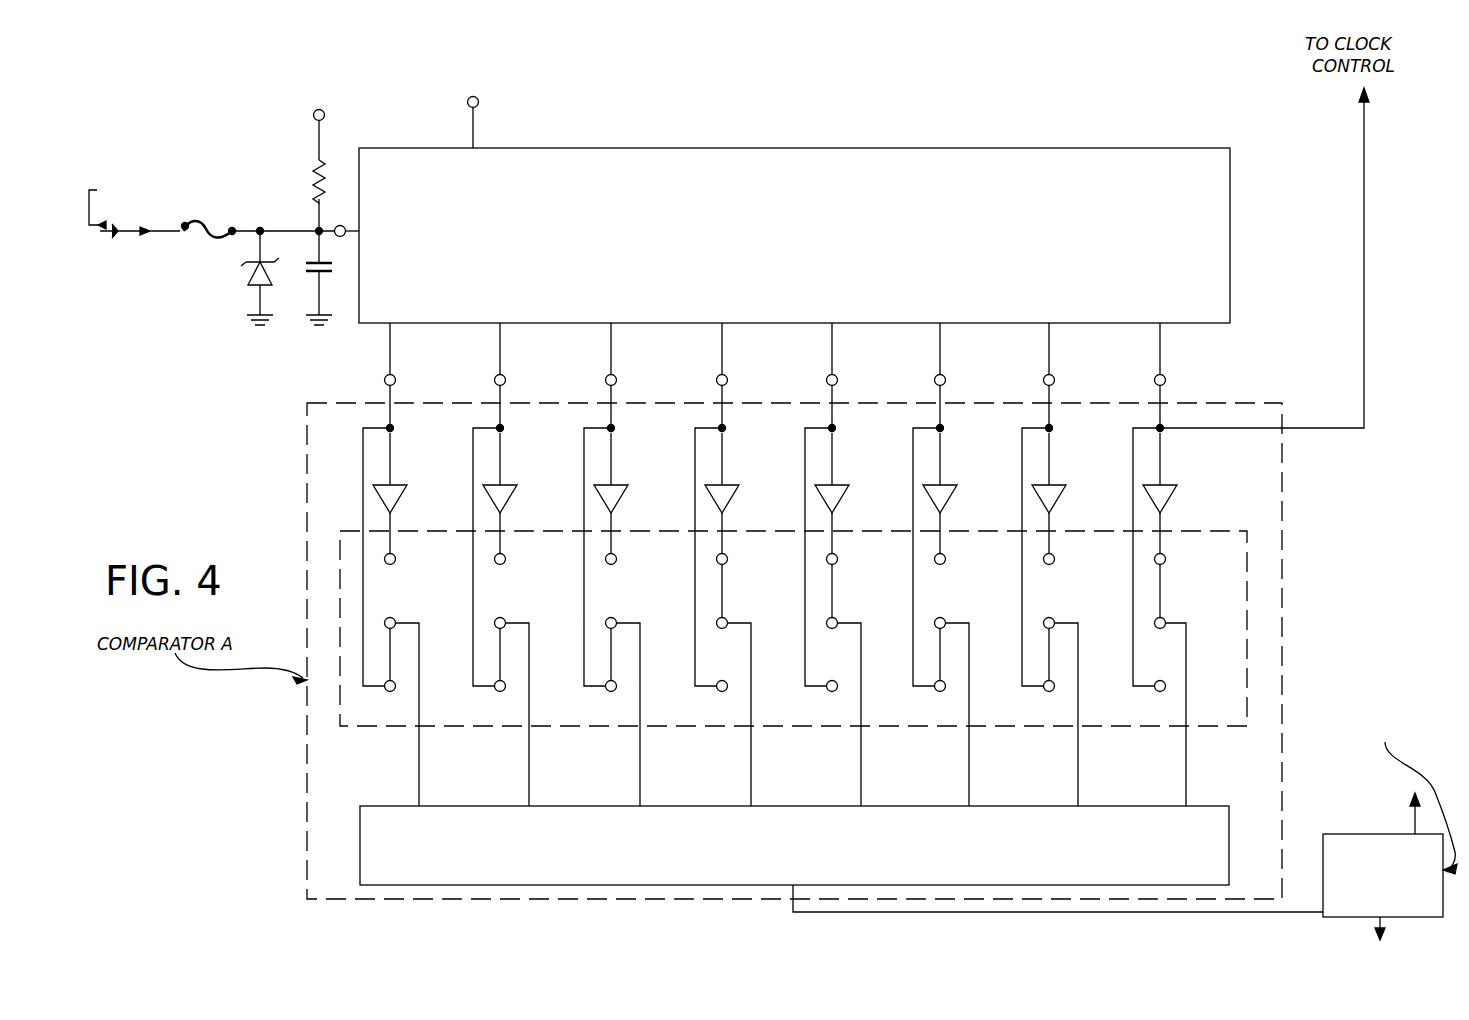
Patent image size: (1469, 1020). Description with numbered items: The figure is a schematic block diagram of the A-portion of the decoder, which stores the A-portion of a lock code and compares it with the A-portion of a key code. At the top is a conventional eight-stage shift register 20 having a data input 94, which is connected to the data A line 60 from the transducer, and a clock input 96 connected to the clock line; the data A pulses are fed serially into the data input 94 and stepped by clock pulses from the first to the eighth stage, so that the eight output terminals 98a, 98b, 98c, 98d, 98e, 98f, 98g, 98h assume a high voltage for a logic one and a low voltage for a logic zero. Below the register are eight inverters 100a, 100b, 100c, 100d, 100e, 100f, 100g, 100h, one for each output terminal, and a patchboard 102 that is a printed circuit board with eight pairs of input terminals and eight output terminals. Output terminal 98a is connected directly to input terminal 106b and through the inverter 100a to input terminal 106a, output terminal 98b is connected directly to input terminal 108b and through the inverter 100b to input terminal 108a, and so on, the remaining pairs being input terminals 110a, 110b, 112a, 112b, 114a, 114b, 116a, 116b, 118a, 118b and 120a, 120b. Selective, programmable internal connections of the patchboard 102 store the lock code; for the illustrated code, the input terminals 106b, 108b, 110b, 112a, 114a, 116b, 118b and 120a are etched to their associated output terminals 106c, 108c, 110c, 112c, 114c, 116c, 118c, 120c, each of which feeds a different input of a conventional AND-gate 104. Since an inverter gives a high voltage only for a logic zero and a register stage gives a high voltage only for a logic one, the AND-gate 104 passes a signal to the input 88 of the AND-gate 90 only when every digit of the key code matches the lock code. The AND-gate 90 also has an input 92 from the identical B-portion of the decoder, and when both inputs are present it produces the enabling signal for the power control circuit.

The shift register 20 is at (1014, 147).
The data A line 60 is at (162, 235).
The input to AND-gate 90 88 is at (1254, 911).
The AND-gate 90 is at (1383, 866).
The input to AND-gate 90 92 is at (1451, 852).
The data input 94 is at (336, 225).
The clock input 96 is at (480, 102).
The output terminal 98a is at (385, 379).
The output terminal 98b is at (495, 379).
The output terminal 98c is at (604, 379).
The output terminal 98d is at (715, 378).
The output terminal 98e is at (825, 378).
The output terminal 98f is at (933, 377).
The output terminal 98g is at (1043, 382).
The output terminal 98h is at (1154, 380).
The inverter 100a is at (399, 485).
The inverter 100b is at (509, 485).
The inverter 100c is at (620, 485).
The inverter 100d is at (731, 485).
The inverter 100e is at (841, 485).
The inverter 100f is at (949, 485).
The inverter 100g is at (1058, 487).
The inverter 100h is at (1169, 485).
The patchboard 102 is at (340, 552).
The AND-gate 104 is at (794, 845).
The input terminal 106a is at (387, 564).
The input terminal 106b is at (388, 692).
The output terminal 106c is at (385, 598).
The input terminal 108a is at (502, 564).
The input terminal 108b is at (504, 691).
The output terminal 108c is at (504, 617).
The input terminal 110a is at (613, 564).
The input terminal 110b is at (615, 691).
The output terminal 110c is at (615, 617).
The input terminal 112a is at (726, 563).
The input terminal 112b is at (726, 691).
The output terminal 112c is at (726, 617).
The input terminal 114a is at (838, 559).
The input terminal 114b is at (836, 691).
The output terminal 114c is at (836, 618).
The input terminal 116a is at (946, 559).
The input terminal 116b is at (942, 692).
The output terminal 116c is at (944, 618).
The input terminal 118a is at (1055, 559).
The input terminal 118b is at (1051, 692).
The output terminal 118c is at (1053, 618).
The input terminal 120a is at (1166, 559).
The input terminal 120b is at (1162, 692).
The output terminal 120c is at (1164, 618).